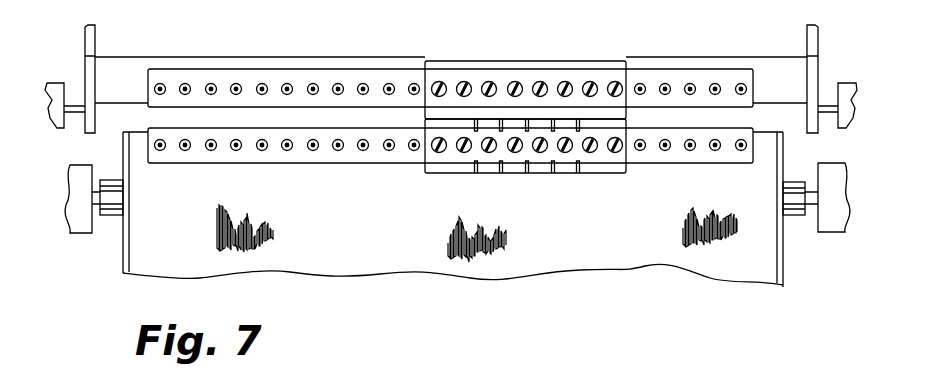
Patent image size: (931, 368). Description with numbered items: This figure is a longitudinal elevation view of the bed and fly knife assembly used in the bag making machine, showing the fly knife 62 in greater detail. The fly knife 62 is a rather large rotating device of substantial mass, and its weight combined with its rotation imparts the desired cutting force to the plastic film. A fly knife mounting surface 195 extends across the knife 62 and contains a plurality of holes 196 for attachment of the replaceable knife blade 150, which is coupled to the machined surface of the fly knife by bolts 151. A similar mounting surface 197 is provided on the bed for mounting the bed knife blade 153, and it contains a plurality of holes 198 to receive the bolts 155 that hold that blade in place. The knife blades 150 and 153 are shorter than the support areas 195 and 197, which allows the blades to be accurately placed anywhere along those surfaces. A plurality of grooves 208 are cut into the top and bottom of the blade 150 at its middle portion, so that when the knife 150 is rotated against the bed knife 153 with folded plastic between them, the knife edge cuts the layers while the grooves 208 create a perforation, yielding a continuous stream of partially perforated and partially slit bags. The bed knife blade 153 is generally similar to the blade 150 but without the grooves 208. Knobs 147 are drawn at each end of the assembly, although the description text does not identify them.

The fly knife 62 is at (637, 258).
The adjustment knob 147 is at (83, 233).
The replaceable knife blade 150 is at (446, 174).
The bolts 151 is at (590, 153).
The bed knife blade 153 is at (453, 22).
The bolts 155 is at (563, 81).
The fly knife mounting surface 195 is at (172, 165).
The holes 196 is at (288, 151).
The mounting surface 197 is at (157, 68).
The holes 198 is at (313, 83).
The grooves 208 is at (501, 174).